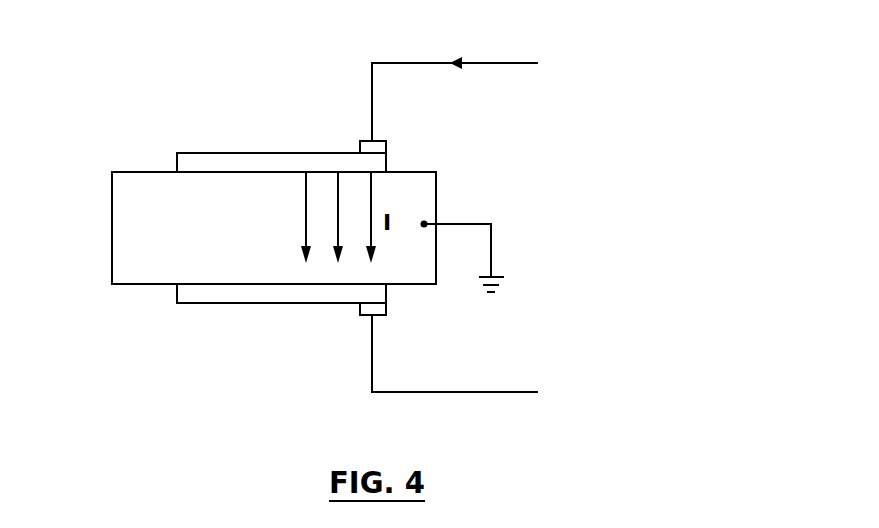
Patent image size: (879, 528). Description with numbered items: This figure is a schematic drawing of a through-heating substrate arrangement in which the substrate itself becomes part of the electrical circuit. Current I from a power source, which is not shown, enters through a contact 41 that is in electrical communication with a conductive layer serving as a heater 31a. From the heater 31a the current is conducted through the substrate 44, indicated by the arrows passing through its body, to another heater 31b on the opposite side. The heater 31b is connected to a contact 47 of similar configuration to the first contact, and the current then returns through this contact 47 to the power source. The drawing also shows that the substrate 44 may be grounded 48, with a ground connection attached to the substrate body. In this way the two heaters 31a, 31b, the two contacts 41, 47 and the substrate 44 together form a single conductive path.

The substrate 44 is at (112, 234).
The conductive layer (heater) 31a is at (267, 153).
The heater 31b is at (282, 303).
The contact 41 is at (360, 143).
The contact 47 is at (361, 310).
The ground 48 is at (491, 242).